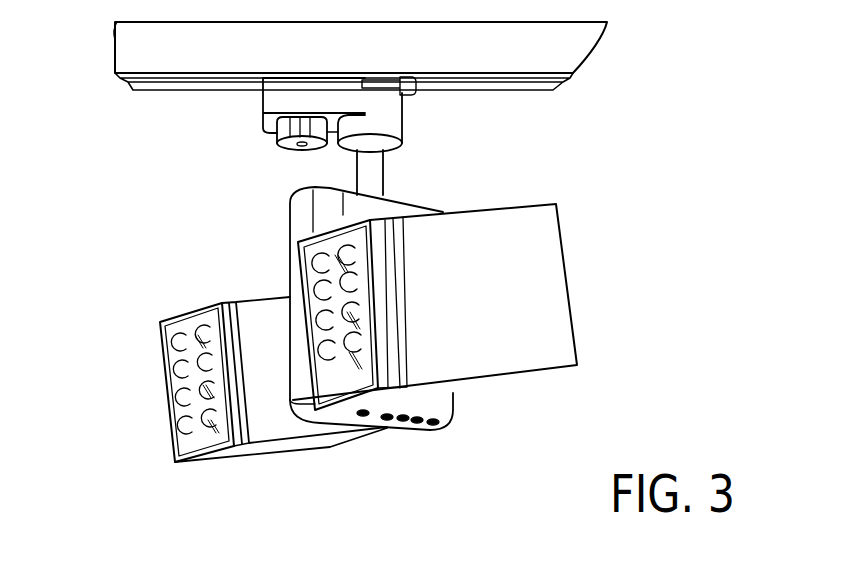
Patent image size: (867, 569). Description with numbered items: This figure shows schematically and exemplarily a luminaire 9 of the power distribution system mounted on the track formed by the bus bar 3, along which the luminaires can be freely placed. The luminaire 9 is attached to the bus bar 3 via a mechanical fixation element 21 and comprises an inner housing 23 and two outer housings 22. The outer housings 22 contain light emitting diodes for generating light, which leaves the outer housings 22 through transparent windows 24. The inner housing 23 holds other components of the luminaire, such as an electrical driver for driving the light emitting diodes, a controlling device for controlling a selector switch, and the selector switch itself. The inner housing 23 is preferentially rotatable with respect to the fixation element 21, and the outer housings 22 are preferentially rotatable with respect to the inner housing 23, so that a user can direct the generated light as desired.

The bus bar 3 is at (567, 42).
The mechanical fixation element 21 is at (417, 127).
The luminaire 9 is at (633, 238).
The outer housing 22 is at (577, 305).
The inner housing 23 is at (455, 405).
The transparent window 24 is at (328, 267).